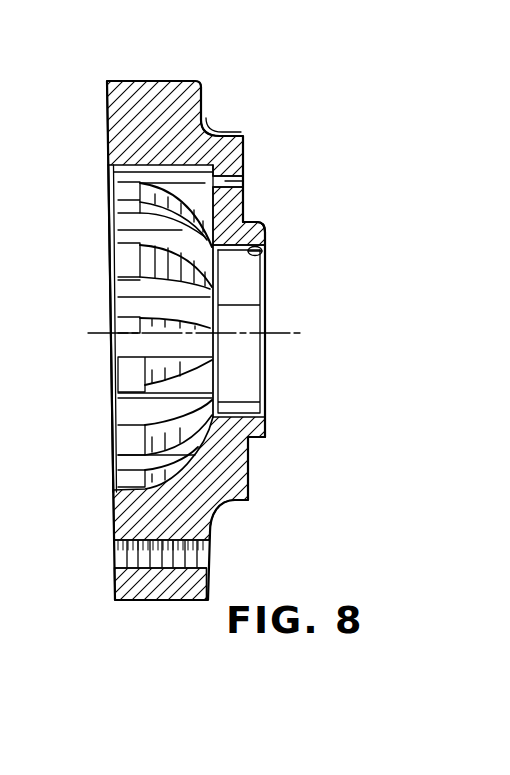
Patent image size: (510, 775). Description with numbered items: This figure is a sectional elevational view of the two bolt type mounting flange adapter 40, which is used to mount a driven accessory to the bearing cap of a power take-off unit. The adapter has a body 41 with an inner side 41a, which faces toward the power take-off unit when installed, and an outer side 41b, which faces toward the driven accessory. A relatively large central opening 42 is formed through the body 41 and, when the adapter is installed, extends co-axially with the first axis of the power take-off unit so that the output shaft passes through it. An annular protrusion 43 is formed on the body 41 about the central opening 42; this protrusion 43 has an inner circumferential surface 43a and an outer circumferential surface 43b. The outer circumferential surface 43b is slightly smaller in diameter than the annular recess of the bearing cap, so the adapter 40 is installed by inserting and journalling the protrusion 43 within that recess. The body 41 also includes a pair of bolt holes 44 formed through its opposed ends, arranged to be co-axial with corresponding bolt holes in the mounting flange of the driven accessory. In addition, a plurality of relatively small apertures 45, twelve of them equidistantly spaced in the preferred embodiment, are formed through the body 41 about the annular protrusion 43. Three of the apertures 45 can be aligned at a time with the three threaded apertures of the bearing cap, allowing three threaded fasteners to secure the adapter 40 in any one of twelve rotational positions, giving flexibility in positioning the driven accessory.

The two bolt type mounting flange adapter 40 is at (248, 96).
The body 41 is at (167, 97).
The inner side 41a is at (243, 148).
The outer side 41b is at (107, 128).
The central opening 42 is at (252, 415).
The annular protrusion 43 is at (266, 232).
The inner circumferential surface 43a is at (257, 252).
The outer circumferential surface 43b is at (248, 222).
The bolt holes 44 is at (128, 566).
The apertures 45 is at (243, 182).